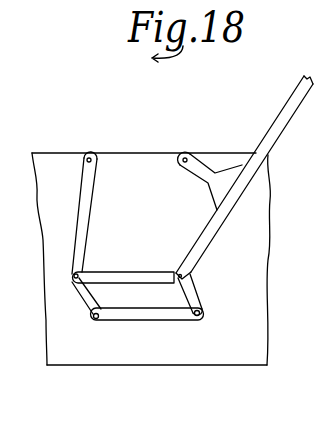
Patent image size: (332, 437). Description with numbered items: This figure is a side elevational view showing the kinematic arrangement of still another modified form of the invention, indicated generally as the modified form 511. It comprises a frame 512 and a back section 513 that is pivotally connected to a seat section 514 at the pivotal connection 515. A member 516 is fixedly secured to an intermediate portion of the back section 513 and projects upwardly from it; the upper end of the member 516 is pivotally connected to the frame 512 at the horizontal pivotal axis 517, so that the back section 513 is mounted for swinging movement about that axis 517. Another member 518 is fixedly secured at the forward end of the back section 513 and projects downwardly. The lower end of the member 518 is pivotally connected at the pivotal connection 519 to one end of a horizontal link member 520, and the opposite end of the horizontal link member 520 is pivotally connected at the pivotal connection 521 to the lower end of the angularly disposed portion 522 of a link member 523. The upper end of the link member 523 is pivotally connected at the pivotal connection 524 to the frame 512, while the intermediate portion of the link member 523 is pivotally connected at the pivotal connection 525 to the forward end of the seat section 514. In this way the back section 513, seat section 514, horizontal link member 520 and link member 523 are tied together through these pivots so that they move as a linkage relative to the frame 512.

The modified form of the invention 511 is at (106, 103).
The frame 512 is at (266, 212).
The back section 513 is at (272, 118).
The seat section 514 is at (115, 271).
The pivotal connection 515 is at (173, 271).
The member 516 is at (199, 160).
The horizontal pivotal axis 517 is at (184, 155).
The member 518 is at (192, 292).
The pivotal connection 519 is at (200, 308).
The horizontal link member 520 is at (122, 322).
The pivotal connection 521 is at (93, 322).
The angularly disposed portion 522 is at (84, 297).
The link member 523 is at (74, 227).
The pivotal connection 524 is at (89, 153).
The pivotal connection 525 is at (72, 275).